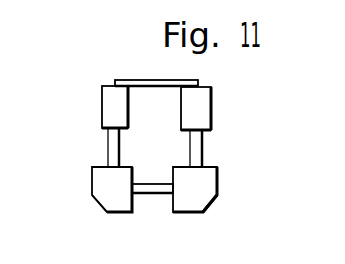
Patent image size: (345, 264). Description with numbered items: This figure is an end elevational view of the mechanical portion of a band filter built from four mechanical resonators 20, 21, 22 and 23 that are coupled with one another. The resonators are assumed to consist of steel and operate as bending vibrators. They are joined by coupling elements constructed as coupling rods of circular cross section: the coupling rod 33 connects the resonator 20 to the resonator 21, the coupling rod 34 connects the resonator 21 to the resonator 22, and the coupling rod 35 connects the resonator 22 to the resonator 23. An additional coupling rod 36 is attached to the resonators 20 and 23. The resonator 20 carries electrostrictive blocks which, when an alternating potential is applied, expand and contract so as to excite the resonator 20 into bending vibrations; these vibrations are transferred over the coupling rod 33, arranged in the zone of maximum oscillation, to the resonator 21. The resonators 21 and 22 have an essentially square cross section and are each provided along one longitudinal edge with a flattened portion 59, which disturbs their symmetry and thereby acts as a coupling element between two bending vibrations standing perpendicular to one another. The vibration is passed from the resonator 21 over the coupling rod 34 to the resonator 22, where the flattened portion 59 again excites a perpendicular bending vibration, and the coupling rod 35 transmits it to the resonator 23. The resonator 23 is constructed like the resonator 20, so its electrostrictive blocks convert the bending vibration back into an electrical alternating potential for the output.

The additional coupling rod 36 is at (178, 82).
The mechanical resonator 20 is at (107, 108).
The mechanical resonator 23 is at (200, 107).
The coupling rod 33 is at (107, 147).
The coupling rod 35 is at (203, 146).
The mechanical resonator 21 is at (124, 204).
The mechanical resonator 22 is at (216, 183).
The coupling rod 34 is at (163, 194).
The flattened portion 59 is at (96, 201).